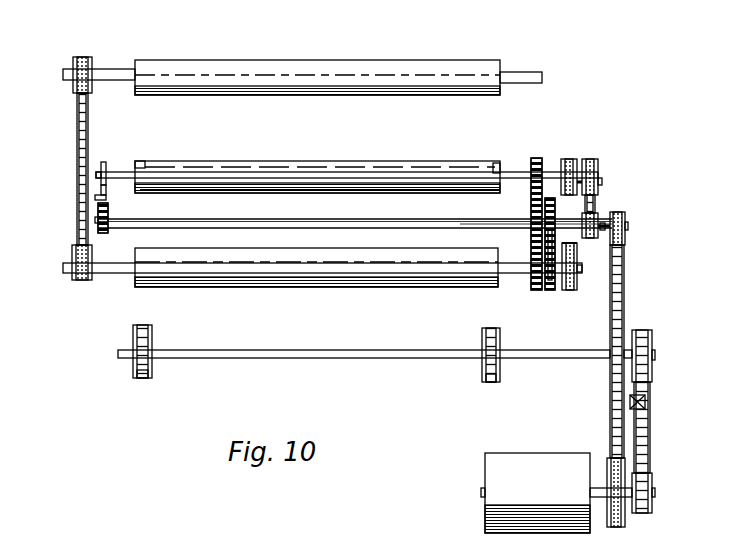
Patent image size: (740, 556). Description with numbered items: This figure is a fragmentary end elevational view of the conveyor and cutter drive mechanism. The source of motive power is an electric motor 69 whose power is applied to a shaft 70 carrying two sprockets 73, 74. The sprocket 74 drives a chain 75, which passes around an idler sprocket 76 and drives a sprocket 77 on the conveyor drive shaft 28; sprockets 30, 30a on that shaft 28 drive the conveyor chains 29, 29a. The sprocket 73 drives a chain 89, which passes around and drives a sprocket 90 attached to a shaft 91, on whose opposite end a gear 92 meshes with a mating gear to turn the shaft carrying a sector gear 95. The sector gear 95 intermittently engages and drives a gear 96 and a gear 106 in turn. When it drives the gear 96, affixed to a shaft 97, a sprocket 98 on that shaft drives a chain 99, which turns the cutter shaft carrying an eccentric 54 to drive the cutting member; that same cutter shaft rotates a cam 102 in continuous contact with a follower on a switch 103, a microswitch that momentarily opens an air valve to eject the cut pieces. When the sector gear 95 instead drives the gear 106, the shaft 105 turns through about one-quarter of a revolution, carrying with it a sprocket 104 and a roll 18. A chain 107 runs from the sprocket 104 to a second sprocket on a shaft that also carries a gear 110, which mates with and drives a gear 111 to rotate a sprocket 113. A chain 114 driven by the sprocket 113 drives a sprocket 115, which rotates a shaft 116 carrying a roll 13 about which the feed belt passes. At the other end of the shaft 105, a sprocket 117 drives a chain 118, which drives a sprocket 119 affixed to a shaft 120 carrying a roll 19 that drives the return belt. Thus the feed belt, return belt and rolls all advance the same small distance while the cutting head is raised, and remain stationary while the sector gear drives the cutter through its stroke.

The roll 13 is at (140, 191).
The roll 18 is at (328, 263).
The roll 19 is at (440, 68).
The drive shaft 28 is at (288, 358).
The conveyor chain 29 is at (490, 382).
The conveyor chain 29a is at (146, 378).
The sprocket 30 is at (482, 338).
The sprocket 30a is at (152, 337).
The eccentric 54 is at (162, 165).
The electric motor 69 is at (505, 471).
The shaft 70 is at (657, 493).
The sprocket 73 is at (622, 518).
The sprocket 74 is at (652, 506).
The chain 75 is at (648, 440).
The idler sprocket 76 is at (647, 403).
The sprocket 77 is at (650, 336).
The chain 89 is at (624, 313).
The sprocket 90 is at (628, 236).
The shaft 91 is at (383, 221).
The gear 92 is at (108, 232).
The sector gear 95 is at (532, 211).
The gear 96 is at (536, 158).
The shaft 97 is at (338, 178).
The sprocket 98 is at (566, 159).
The chain 99 is at (578, 159).
The cam 102 is at (103, 170).
The switch 103 is at (106, 198).
The sprocket 104 is at (580, 258).
The shaft 105 is at (110, 273).
The gear 106 is at (536, 282).
The chain 107 is at (569, 290).
The gear 110 is at (550, 290).
The gear 111 is at (556, 207).
The sprocket 113 is at (598, 216).
The chain 114 is at (590, 159).
The sprocket 115 is at (600, 171).
The shaft 116 is at (602, 182).
The sprocket 117 is at (76, 252).
The chain 118 is at (77, 125).
The sprocket 119 is at (90, 62).
The shaft 120 is at (110, 72).